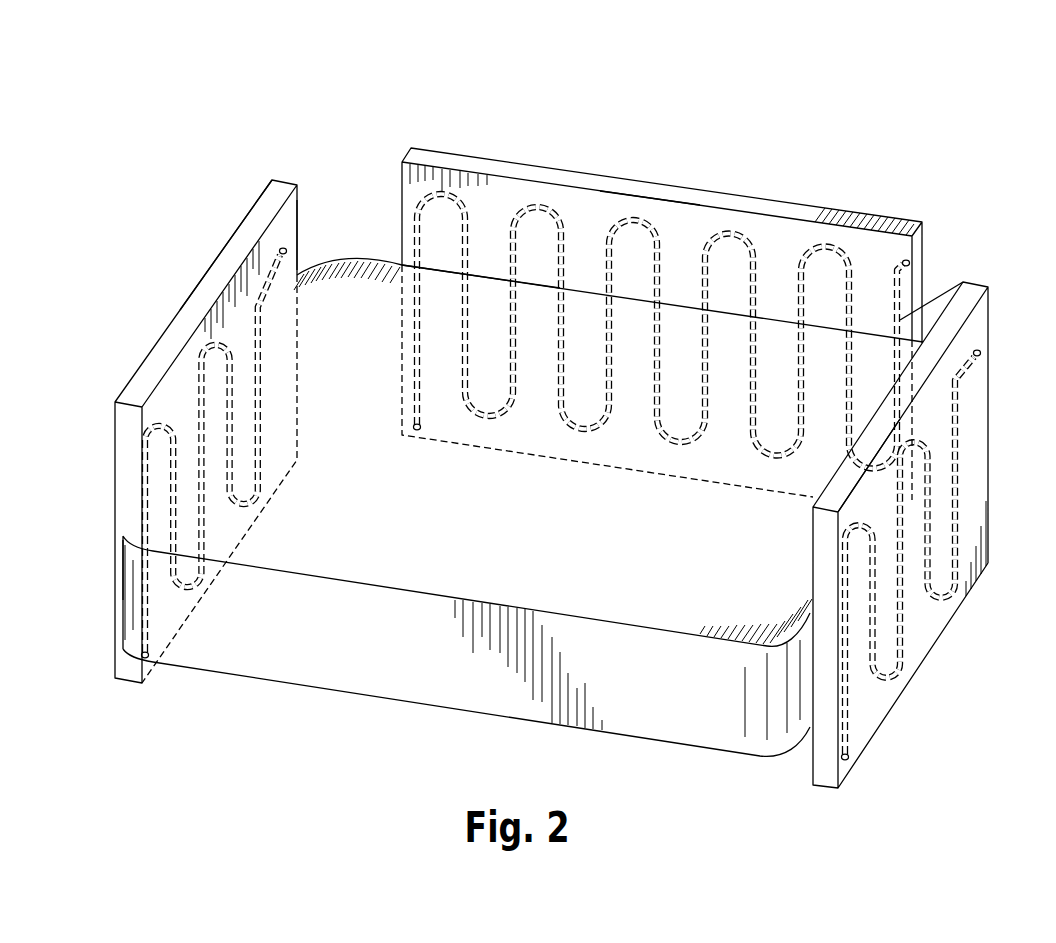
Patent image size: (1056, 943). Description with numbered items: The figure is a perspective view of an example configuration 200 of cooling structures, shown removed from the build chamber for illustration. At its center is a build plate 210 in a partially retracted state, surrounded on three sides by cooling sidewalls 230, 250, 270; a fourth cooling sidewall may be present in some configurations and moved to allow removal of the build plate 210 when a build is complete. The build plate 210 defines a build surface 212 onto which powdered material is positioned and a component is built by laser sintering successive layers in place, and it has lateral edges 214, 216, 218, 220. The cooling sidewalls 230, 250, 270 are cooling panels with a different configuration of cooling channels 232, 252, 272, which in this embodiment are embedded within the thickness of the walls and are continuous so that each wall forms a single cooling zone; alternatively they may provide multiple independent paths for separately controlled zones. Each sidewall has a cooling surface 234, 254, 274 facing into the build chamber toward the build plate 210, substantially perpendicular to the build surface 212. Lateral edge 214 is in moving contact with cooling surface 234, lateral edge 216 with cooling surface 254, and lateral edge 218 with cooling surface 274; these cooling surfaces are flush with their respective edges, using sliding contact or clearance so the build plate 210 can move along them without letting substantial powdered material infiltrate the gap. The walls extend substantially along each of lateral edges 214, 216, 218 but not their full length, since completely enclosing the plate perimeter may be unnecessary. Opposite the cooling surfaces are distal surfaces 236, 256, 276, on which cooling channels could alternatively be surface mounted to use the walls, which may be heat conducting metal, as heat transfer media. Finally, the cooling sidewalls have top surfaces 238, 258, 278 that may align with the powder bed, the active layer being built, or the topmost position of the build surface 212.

The configuration of cooling structures 200 is at (533, 414).
The build plate 210 is at (523, 512).
The build surface 212 is at (333, 553).
The lateral edge 214 is at (218, 390).
The lateral edge 216 is at (598, 290).
The lateral edge 218 is at (810, 613).
The lateral edge 220 is at (470, 598).
The cooling sidewall 230 is at (202, 408).
The cooling channels 232 is at (198, 370).
The cooling surface 234 is at (287, 220).
The distal surface 236 is at (203, 270).
The top surface 238 is at (263, 210).
The cooling sidewall 250 is at (701, 303).
The cooling channels 252 is at (558, 210).
The cooling surface 254 is at (433, 175).
The distal surface 256 is at (767, 197).
The top surface 258 is at (690, 197).
The cooling sidewall 270 is at (882, 522).
The cooling channels 272 is at (957, 605).
The cooling surface 274 is at (857, 455).
The distal surface 276 is at (873, 707).
The top surface 278 is at (975, 296).